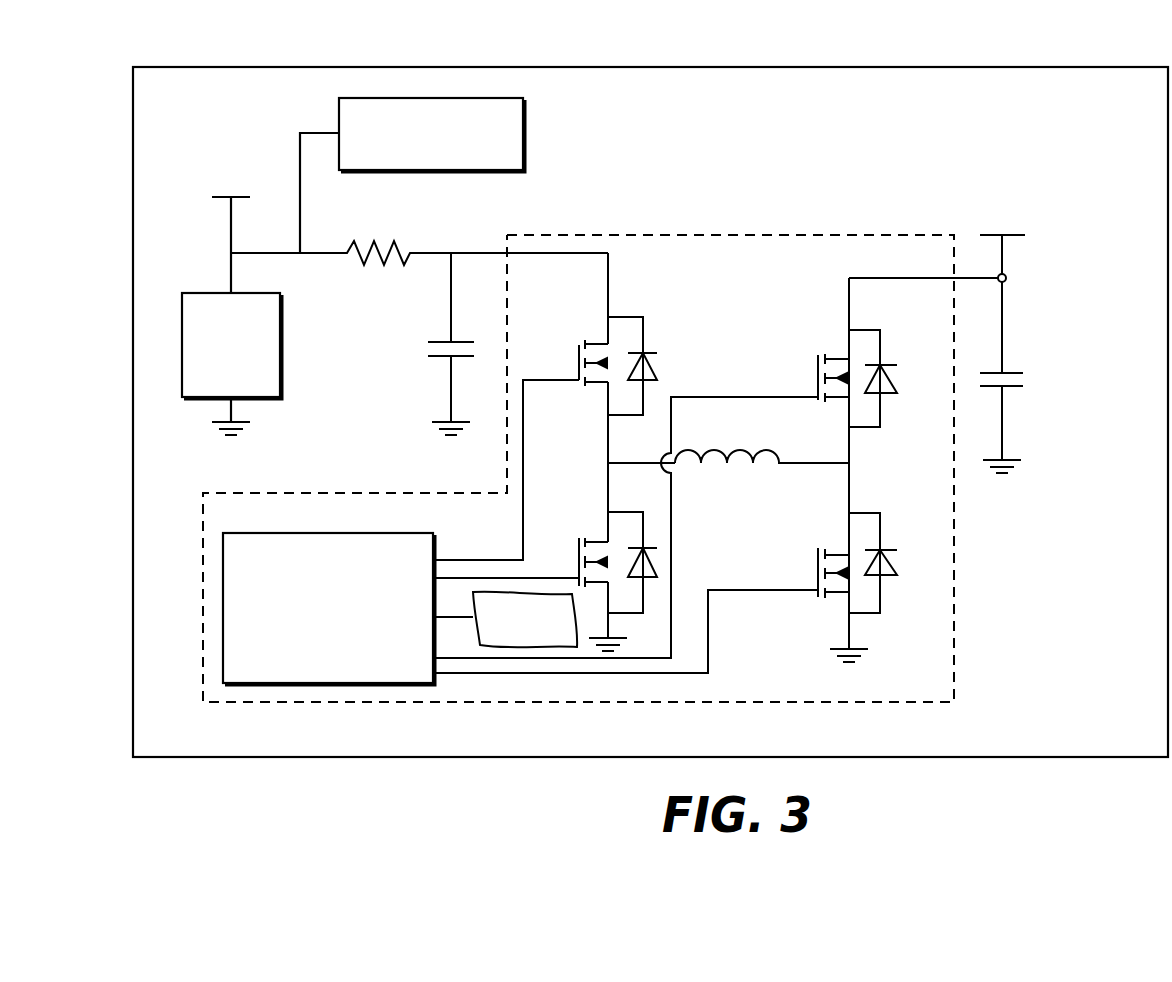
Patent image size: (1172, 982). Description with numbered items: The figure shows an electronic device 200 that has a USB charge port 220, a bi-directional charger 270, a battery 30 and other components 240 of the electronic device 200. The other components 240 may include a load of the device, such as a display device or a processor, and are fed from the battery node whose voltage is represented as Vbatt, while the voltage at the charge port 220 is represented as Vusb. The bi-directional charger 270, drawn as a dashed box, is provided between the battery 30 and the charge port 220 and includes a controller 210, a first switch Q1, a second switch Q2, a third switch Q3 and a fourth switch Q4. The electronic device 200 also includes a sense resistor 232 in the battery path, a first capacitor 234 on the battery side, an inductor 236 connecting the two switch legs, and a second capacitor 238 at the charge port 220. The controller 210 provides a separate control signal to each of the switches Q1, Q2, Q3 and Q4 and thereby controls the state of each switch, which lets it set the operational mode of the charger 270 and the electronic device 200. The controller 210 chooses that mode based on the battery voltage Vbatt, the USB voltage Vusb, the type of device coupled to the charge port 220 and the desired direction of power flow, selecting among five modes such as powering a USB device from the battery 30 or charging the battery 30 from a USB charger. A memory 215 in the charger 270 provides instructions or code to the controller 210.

The electronic device 200 is at (1094, 67).
The other components 240 is at (440, 98).
The battery 30 is at (200, 293).
The resistor 232 is at (371, 233).
The first capacitor 234 is at (429, 348).
The bi-directional charger 270 is at (954, 603).
The first switch Q1 is at (577, 362).
The second switch Q2 is at (577, 558).
The third switch Q3 is at (816, 381).
The fourth switch Q4 is at (817, 579).
The inductor 236 is at (759, 474).
The controller 210 is at (315, 533).
The memory 215 is at (517, 647).
The USB charge port 220 is at (1007, 277).
The second capacitor 238 is at (1035, 361).